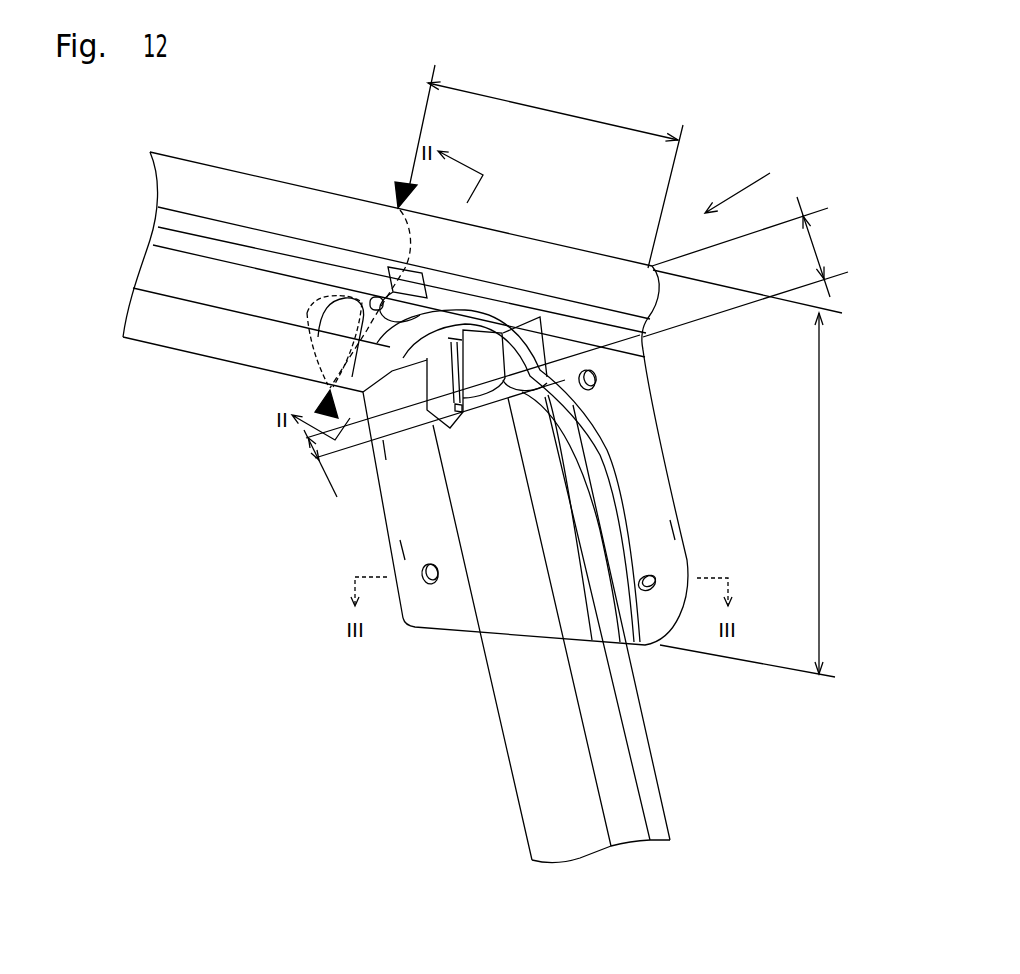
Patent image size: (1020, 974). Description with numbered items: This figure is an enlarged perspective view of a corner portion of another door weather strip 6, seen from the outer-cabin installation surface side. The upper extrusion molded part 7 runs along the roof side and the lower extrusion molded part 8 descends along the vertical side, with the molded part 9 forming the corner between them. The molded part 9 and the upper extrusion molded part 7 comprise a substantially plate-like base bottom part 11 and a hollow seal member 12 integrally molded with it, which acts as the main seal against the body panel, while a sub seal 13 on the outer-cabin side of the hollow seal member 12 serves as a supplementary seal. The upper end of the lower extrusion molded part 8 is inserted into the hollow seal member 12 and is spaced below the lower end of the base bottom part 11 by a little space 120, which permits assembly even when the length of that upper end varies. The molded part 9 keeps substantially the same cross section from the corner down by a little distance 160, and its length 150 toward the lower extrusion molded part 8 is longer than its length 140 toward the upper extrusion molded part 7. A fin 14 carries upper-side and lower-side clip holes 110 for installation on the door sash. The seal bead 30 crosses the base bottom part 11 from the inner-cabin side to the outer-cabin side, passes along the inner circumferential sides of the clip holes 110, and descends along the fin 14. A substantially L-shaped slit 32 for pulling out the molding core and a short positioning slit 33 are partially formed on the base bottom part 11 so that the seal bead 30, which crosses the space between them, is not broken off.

The door weather strip 6 is at (747, 186).
The upper extrusion molded part 7 is at (196, 339).
The lower extrusion molded part 8 is at (513, 770).
The molded part 9 is at (392, 528).
The base bottom part 11 is at (432, 310).
The hollow seal member 12 is at (335, 328).
The sub seal 13 is at (571, 258).
The fin 14 is at (672, 530).
The seal bead 30 is at (603, 420).
The slit 32 is at (383, 440).
The slit 33 is at (385, 333).
The clip hole 110 is at (593, 375).
The space 120 is at (303, 463).
The length 140 is at (546, 166).
The length 150 is at (758, 473).
The distance 160 is at (749, 267).